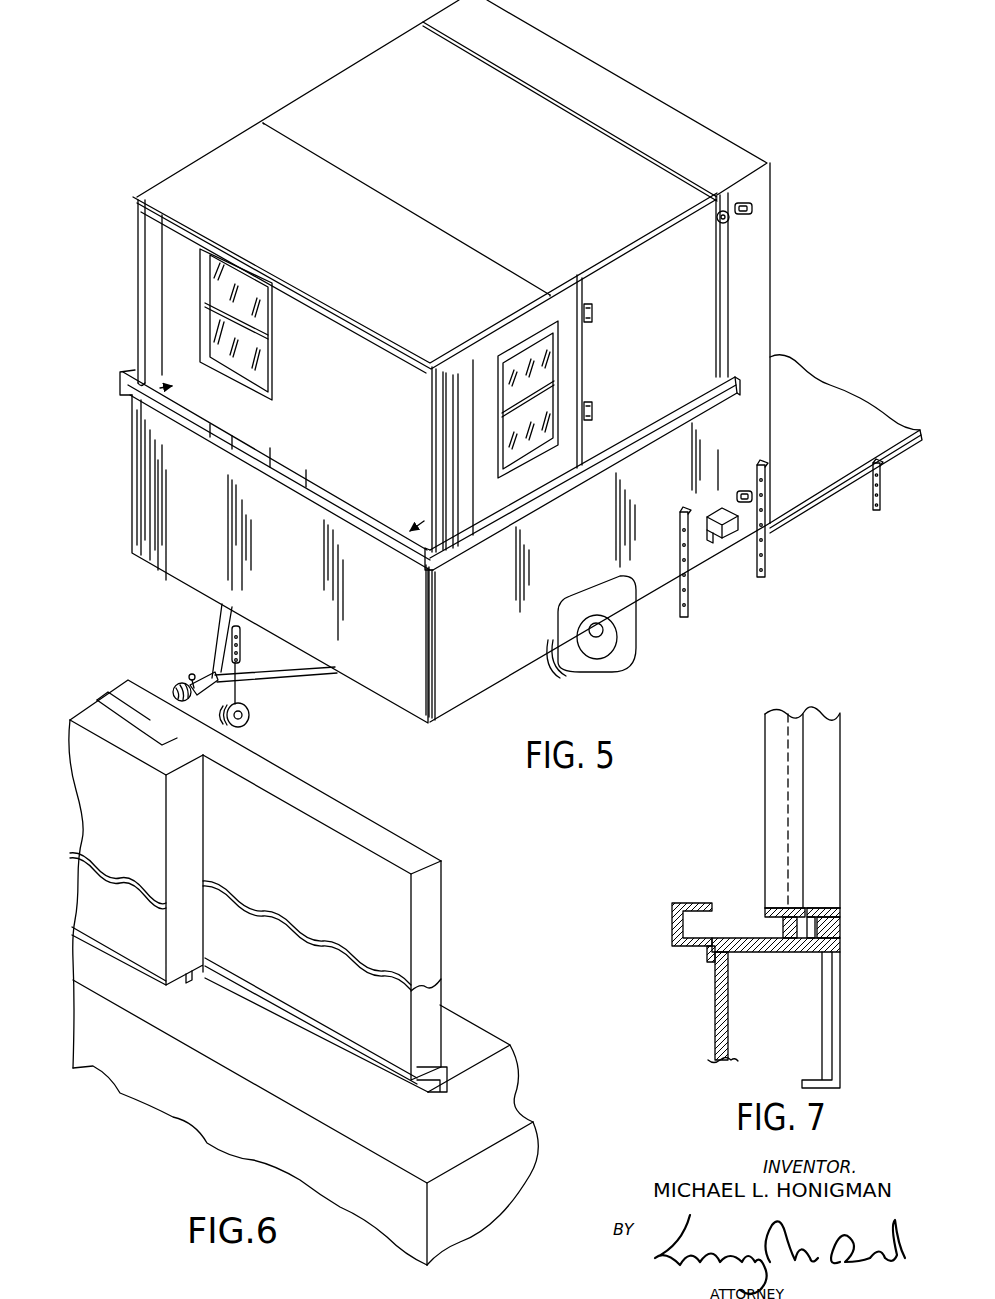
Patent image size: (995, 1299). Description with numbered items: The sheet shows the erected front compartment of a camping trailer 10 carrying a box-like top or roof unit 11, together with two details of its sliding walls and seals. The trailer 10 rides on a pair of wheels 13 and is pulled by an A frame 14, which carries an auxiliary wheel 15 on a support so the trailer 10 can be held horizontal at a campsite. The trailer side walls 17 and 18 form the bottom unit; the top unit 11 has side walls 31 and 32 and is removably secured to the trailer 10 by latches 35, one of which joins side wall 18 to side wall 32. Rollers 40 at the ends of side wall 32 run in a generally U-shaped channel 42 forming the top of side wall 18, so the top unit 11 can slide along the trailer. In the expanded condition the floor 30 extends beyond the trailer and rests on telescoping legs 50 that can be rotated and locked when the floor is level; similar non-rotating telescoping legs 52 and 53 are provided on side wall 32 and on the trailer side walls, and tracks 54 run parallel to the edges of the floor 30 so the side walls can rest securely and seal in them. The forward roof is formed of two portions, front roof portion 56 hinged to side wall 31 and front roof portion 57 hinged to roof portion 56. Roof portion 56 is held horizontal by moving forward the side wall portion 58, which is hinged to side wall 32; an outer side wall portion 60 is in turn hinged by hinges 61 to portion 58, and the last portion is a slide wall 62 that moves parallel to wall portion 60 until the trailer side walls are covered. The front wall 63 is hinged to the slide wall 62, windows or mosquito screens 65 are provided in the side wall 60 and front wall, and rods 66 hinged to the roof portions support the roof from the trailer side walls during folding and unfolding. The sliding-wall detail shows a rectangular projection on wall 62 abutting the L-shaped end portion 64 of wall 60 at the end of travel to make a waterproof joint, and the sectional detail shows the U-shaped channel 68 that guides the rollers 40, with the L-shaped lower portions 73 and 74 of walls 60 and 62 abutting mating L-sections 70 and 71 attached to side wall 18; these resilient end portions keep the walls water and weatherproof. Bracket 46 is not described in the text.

In FIG. 5, the trailer 10 is at (172, 586).
In FIG. 5, the top or roof unit 11 is at (672, 90).
In FIG. 5, the wheels 13 is at (622, 640).
In FIG. 5, the A frame 14 is at (220, 652).
In FIG. 5, the auxiliary wheel 15 is at (250, 718).
In FIG. 5, the trailer side wall 17 is at (152, 480).
In FIG. 5, the side wall of the trailer 18 is at (470, 683).
In FIG. 6, the side wall of the trailer 18 is at (305, 1122).
In FIG. 7, the side wall of the trailer 18 is at (729, 1012).
In FIG. 5, the floor 30 is at (830, 405).
In FIG. 5, the side wall of the top unit 31 is at (600, 73).
In FIG. 5, the side wall of the top unit 32 is at (768, 285).
In FIG. 5, the latches 35 is at (755, 208).
In FIG. 5, the rollers 40 is at (722, 208).
In FIG. 5, the U-shaped channel 42 is at (664, 415).
In FIG. 5, the bracket 46 is at (721, 510).
In FIG. 5, the telescoping supports or legs 50 is at (882, 504).
In FIG. 5, the telescoping legs 52 is at (768, 560).
In FIG. 5, the telescoping legs 53 is at (691, 612).
In FIG. 5, the tracks 54 is at (835, 473).
In FIG. 5, the front roof portion 56 is at (517, 176).
In FIG. 5, the front roof portion 57 is at (384, 256).
In FIG. 5, the side wall portion 58 is at (677, 358).
In FIG. 5, the outer side wall portion 60 is at (507, 487).
In FIG. 6, the outer side wall portion 60 is at (93, 901).
In FIG. 7, the outer side wall portion 60 is at (770, 807).
In FIG. 5, the hinges 61 is at (594, 316).
In FIG. 5, the slide wall 62 is at (460, 393).
In FIG. 6, the slide wall 62 is at (377, 876).
In FIG. 7, the slide wall 62 is at (822, 822).
In FIG. 5, the front wall 63 is at (339, 423).
In FIG. 6, the front wall 63 is at (157, 735).
In FIG. 6, the end portion of wall 60 64 is at (177, 750).
In FIG. 5, the windows or mosquito screens 65 is at (242, 282).
In FIG. 5, the rods 66 is at (136, 254).
In FIG. 7, the U-shaped channel 68 is at (674, 923).
In FIG. 7, the L-section 70 is at (783, 926).
In FIG. 7, the L-section 71 is at (840, 935).
In FIG. 7, the L-shaped portion 73 is at (770, 912).
In FIG. 7, the L-shaped portion 74 is at (838, 910).